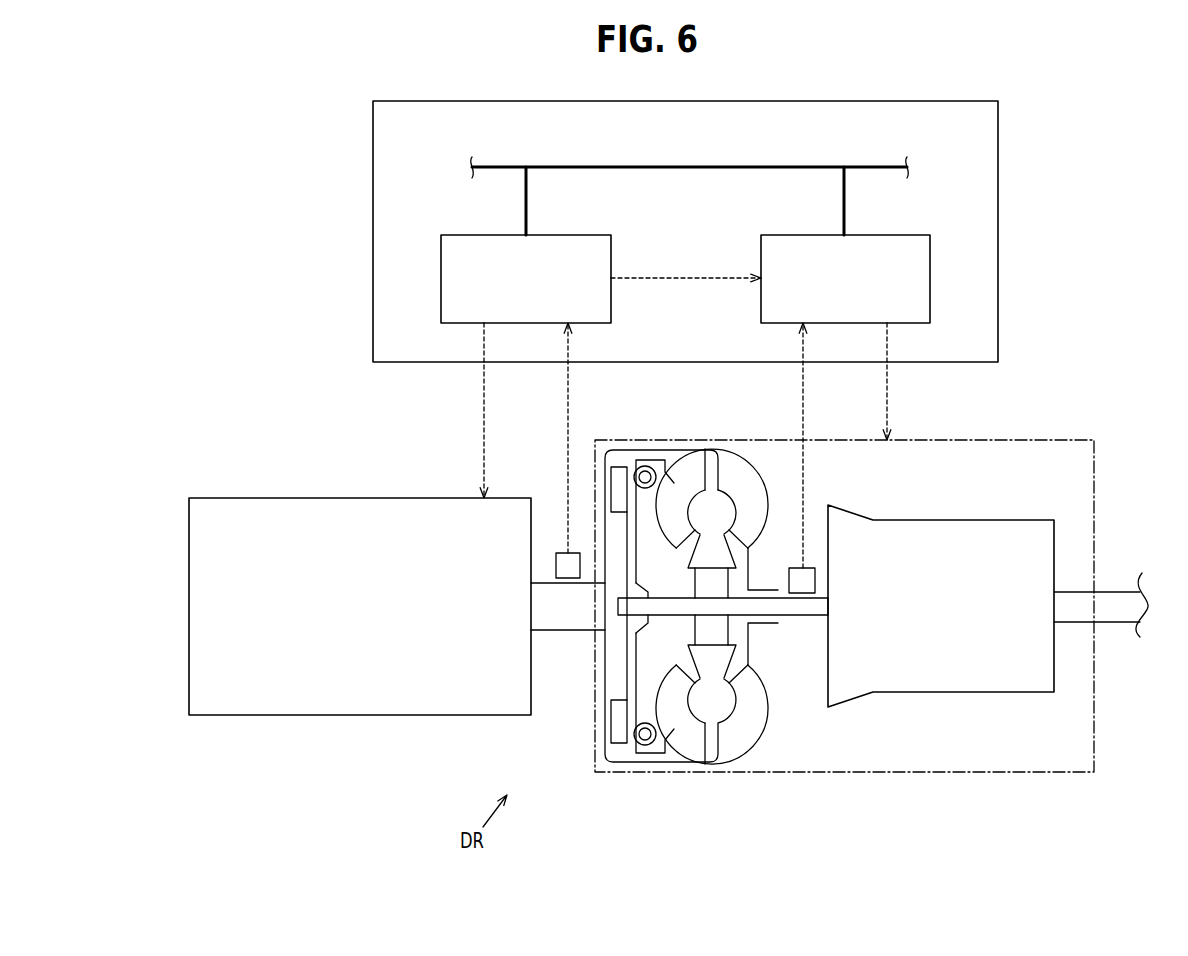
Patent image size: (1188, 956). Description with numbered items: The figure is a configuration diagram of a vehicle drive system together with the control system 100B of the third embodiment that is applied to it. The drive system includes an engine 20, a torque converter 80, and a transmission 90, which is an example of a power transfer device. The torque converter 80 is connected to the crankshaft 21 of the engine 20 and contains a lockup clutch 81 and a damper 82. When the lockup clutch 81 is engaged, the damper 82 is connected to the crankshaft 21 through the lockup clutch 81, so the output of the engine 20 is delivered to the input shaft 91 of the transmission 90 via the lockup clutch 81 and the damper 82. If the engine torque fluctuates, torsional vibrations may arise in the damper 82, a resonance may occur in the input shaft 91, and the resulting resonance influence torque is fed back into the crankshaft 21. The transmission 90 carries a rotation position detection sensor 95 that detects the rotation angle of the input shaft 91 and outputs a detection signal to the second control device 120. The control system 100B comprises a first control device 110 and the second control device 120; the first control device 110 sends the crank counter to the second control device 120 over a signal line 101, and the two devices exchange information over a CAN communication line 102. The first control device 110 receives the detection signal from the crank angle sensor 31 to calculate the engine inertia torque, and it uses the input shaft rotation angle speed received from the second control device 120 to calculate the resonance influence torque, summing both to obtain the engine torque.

The control system 100B is at (999, 126).
The CAN communication line 102 is at (688, 162).
The first control device 110 is at (475, 233).
The second control device 120 is at (795, 233).
The signal line 101 is at (687, 274).
The engine 20 is at (358, 497).
The crankshaft 21 is at (574, 631).
The crank angle sensor 31 is at (555, 563).
The torque converter 80 is at (763, 761).
The lockup clutch 81 is at (606, 776).
The damper 82 is at (646, 466).
The input shaft 91 is at (665, 598).
The rotation position detection sensor 95 is at (816, 580).
The transmission 90 is at (944, 690).